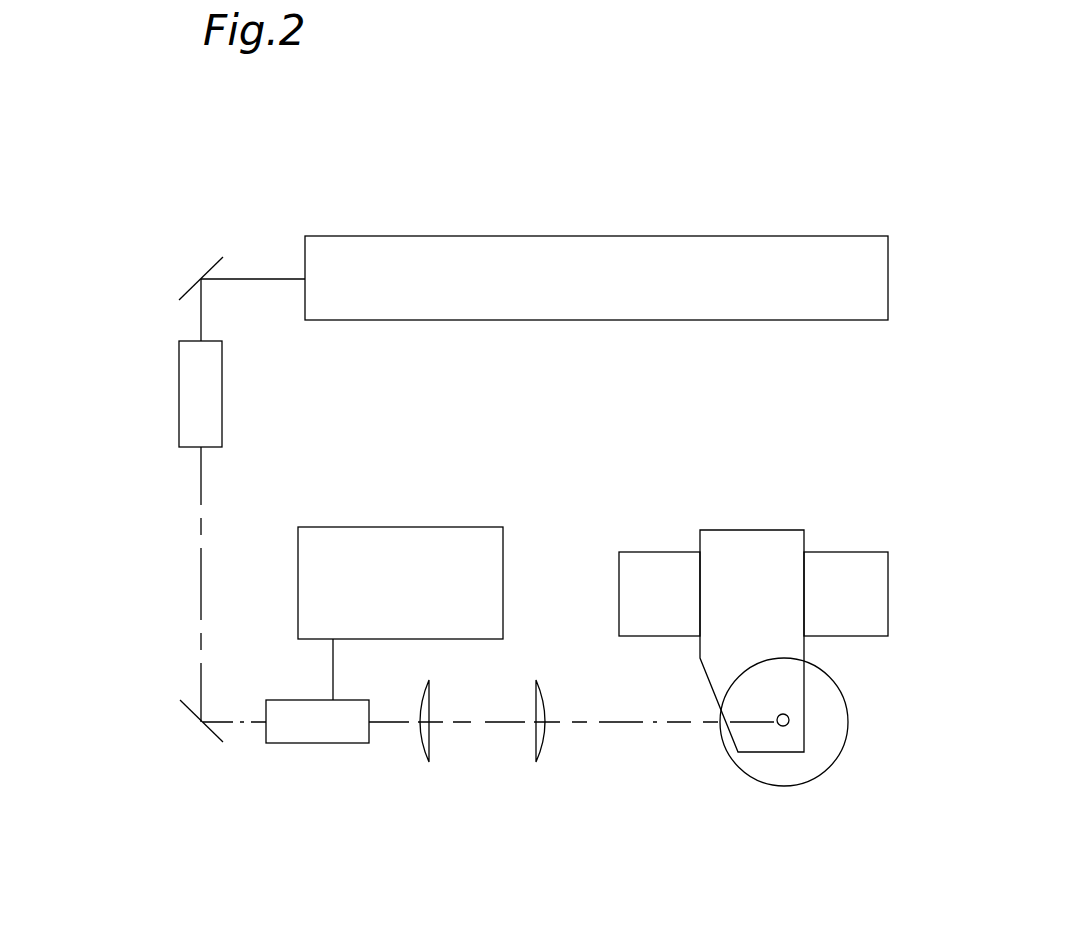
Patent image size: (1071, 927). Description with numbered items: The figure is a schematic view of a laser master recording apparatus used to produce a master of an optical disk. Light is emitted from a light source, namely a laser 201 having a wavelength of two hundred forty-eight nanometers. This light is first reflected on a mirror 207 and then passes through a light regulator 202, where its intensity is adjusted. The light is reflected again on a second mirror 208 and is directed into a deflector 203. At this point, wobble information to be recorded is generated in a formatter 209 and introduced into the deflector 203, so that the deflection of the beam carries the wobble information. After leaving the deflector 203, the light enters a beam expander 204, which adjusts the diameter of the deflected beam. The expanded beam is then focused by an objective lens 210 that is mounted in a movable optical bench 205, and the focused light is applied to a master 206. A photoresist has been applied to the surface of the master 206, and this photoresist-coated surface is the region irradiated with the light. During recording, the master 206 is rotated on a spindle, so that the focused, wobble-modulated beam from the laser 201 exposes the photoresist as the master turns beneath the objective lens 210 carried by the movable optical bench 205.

The laser 201 is at (430, 273).
The light regulator 202 is at (193, 393).
The deflector 203 is at (345, 728).
The beam expander 204 is at (493, 737).
The movable optical bench 205 is at (730, 555).
The master 206 is at (787, 763).
The mirror 207 is at (213, 265).
The mirror 208 is at (209, 736).
The formatter 209 is at (352, 562).
The objective lens 210 is at (788, 712).